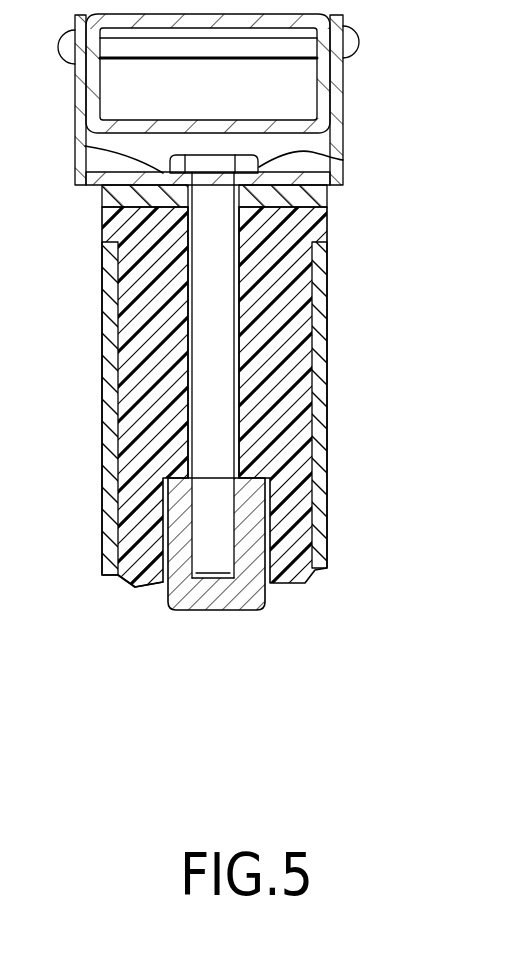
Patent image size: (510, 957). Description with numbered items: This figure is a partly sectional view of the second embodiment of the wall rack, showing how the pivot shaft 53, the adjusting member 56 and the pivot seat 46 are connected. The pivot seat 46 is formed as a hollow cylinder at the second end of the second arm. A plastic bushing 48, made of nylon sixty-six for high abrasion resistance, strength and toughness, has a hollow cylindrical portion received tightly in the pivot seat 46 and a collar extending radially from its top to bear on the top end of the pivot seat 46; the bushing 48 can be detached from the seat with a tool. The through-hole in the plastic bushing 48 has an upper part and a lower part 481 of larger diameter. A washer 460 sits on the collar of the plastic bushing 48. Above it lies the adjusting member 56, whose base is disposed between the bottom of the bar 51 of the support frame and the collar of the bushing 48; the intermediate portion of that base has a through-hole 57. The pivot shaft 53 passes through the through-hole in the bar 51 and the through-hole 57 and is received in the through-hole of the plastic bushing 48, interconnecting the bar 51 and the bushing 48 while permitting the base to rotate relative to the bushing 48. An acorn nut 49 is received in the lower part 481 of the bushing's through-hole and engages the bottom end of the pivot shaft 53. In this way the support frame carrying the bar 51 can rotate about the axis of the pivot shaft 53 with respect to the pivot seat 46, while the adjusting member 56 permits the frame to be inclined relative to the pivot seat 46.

The pivot seat 46 is at (102, 358).
The plastic bushing 48 is at (327, 231).
The acorn nut 49 is at (250, 612).
The bar 51 is at (343, 75).
The pivot shaft 53 is at (343, 160).
The adjusting member 56 is at (345, 106).
The through-hole 57 is at (85, 146).
The washer 460 is at (325, 197).
The lower part 481 is at (165, 586).